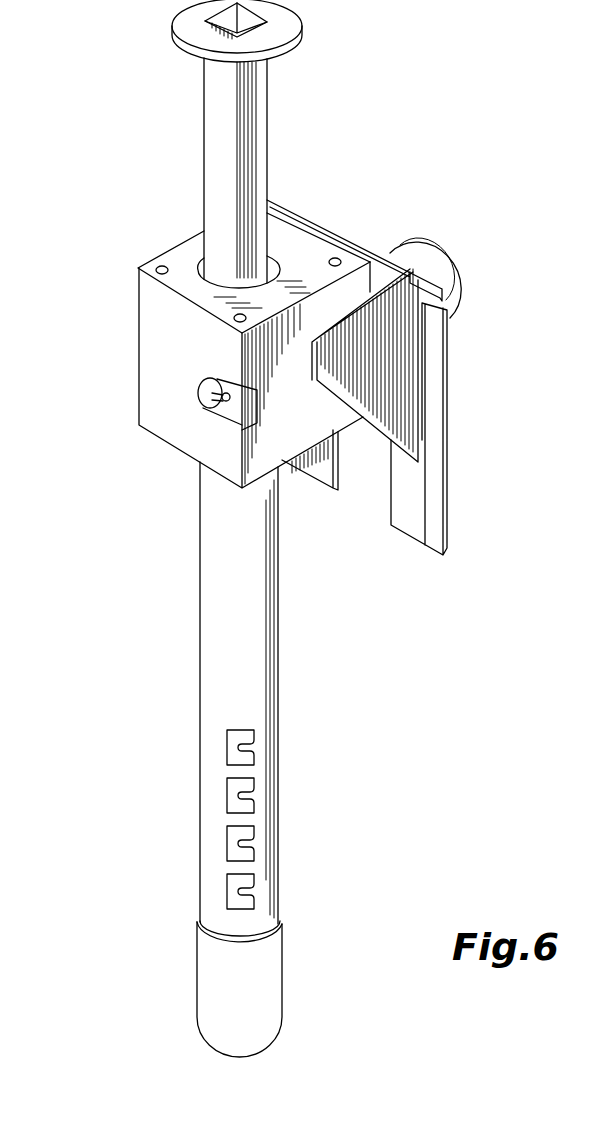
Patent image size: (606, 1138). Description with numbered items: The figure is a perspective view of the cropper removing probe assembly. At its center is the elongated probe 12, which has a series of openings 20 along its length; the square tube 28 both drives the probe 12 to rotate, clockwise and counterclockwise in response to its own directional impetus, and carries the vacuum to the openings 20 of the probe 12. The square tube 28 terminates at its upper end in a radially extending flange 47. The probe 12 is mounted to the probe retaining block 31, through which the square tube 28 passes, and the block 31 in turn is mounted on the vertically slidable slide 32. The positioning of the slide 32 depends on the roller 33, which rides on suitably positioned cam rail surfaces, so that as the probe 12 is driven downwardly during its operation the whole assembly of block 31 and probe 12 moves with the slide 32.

The probe 12 is at (265, 720).
The openings 20 is at (227, 848).
The square tube 28 is at (258, 128).
The probe retaining block 31 is at (152, 395).
The slide 32 is at (415, 525).
The roller 33 is at (443, 277).
The radially extending flange 47 is at (293, 16).